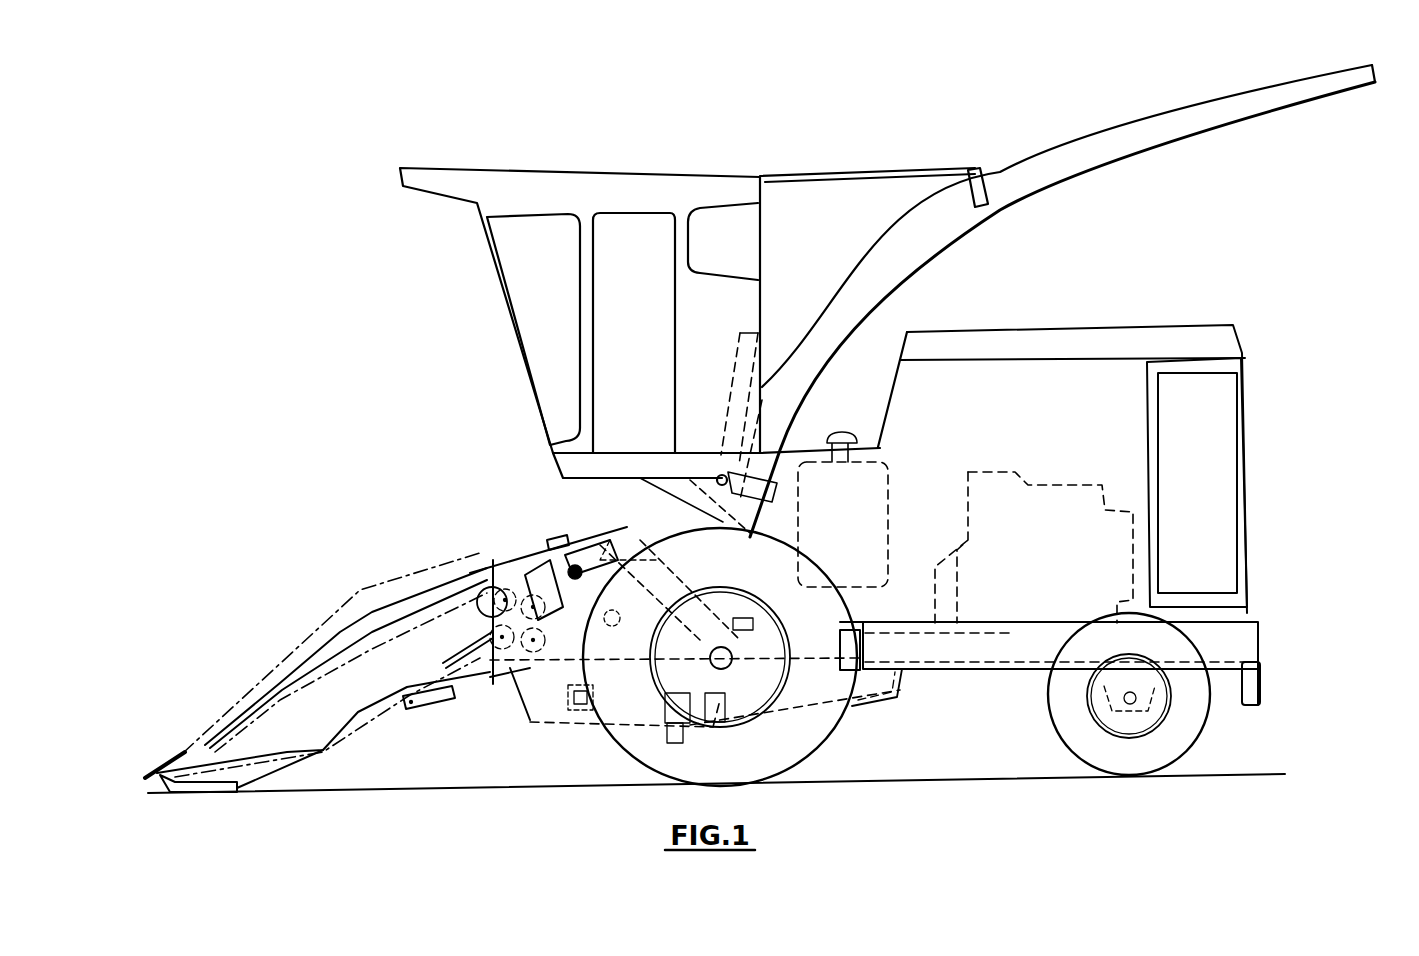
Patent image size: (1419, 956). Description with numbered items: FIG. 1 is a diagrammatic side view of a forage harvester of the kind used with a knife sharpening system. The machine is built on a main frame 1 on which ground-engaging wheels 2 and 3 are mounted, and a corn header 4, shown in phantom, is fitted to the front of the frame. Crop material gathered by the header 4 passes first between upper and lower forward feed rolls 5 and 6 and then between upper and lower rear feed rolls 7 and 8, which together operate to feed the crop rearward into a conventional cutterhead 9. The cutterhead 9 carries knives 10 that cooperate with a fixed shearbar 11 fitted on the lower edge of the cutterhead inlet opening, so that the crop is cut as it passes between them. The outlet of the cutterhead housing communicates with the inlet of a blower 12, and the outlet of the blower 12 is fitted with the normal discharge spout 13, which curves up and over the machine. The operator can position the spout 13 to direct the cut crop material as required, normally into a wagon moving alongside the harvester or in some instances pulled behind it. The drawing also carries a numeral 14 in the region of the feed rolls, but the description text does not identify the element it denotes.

The main frame 1 is at (973, 672).
The ground-engaging wheel 2 is at (820, 737).
The ground-engaging wheel 3 is at (1070, 733).
The corn header 4 is at (280, 657).
The upper forward feed roll 5 is at (480, 607).
The lower forward feed roll 6 is at (450, 657).
The upper rear feed roll 7 is at (520, 560).
The lower rear feed roll 8 is at (497, 702).
The cutterhead 9 is at (630, 530).
The knives 10 is at (562, 663).
The shearbar 11 is at (500, 665).
The blower 12 is at (712, 670).
The discharge spout 13 is at (1077, 172).
The hydraulic cylinder 14 is at (542, 540).